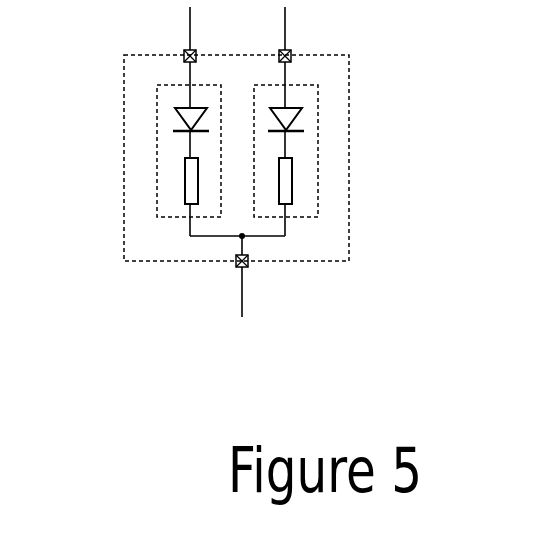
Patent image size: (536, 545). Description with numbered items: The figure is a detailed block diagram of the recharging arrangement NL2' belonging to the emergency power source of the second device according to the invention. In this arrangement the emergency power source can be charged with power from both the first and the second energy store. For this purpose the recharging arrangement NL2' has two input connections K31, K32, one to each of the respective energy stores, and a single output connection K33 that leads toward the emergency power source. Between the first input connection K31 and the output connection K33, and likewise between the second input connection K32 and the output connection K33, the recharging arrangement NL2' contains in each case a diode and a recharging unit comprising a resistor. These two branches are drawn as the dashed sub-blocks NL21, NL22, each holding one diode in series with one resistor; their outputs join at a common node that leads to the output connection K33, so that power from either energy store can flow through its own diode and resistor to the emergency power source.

The connection of the recharging arrangement K31 is at (174, 34).
The connection of the recharging arrangement K32 is at (301, 34).
The connection of the recharging arrangement K33 is at (226, 286).
The recharging arrangement NL2' is at (236, 158).
The first load branch (LED with series resistor) NL21 is at (158, 165).
The second load branch (LED with series resistor) NL22 is at (317, 161).